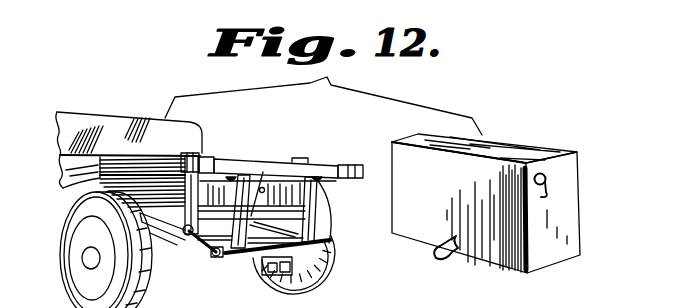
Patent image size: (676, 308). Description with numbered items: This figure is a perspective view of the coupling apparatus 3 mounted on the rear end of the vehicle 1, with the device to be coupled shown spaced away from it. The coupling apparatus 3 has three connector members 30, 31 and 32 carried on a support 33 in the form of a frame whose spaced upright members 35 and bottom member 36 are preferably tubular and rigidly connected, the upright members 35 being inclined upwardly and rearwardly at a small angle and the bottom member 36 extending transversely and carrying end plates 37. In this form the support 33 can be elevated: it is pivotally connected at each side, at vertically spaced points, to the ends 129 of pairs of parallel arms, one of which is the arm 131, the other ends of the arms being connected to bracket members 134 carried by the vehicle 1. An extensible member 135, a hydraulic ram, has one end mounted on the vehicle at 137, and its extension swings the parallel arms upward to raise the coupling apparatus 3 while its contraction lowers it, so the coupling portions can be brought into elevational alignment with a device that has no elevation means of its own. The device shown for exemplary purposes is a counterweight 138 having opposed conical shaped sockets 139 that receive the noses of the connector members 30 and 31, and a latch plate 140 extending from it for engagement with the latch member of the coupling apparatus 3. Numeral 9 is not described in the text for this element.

The vehicle 1 is at (194, 120).
The coupling apparatus 3 is at (323, 164).
The axle bar 9 is at (177, 240).
The connector member 30 is at (200, 158).
The connector member 31 is at (363, 168).
The connector member 32 is at (263, 278).
The support 33 is at (265, 165).
The upright members 35 is at (323, 200).
The bottom member 36 is at (323, 262).
The end plates 37 is at (233, 258).
The ends of parallel arms 129 is at (240, 170).
The parallel arm 131 is at (202, 245).
The bracket members 134 is at (185, 189).
The extensible member 135 is at (261, 206).
The ram mounting end 137 is at (252, 218).
The counterweight 138 is at (545, 152).
The conical shaped sockets 139 is at (544, 195).
The latch plate 140 is at (452, 258).